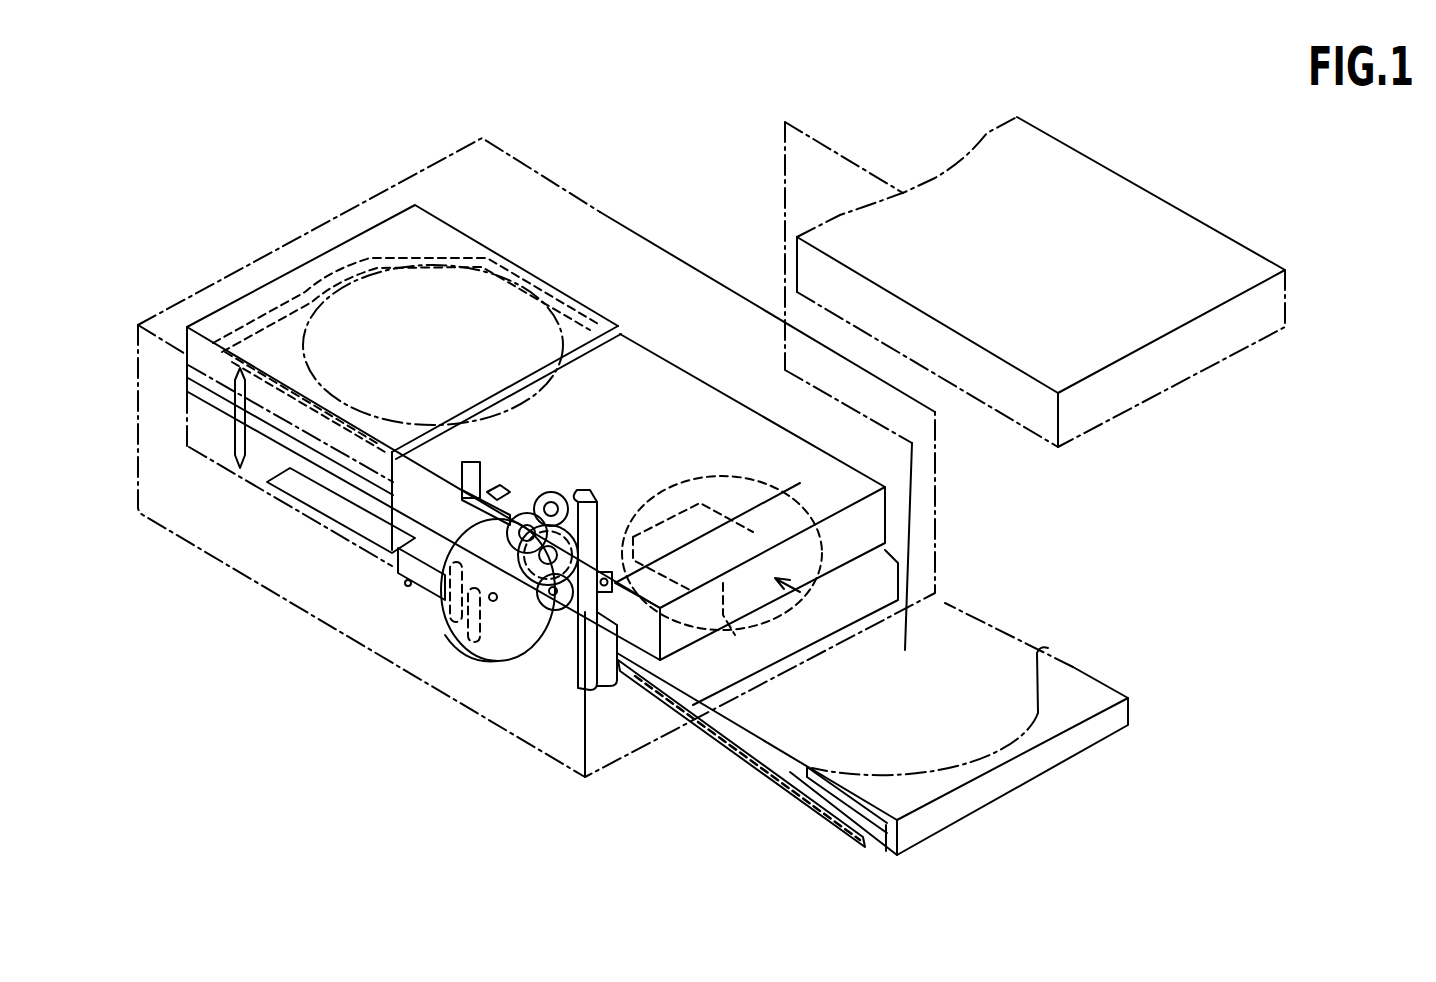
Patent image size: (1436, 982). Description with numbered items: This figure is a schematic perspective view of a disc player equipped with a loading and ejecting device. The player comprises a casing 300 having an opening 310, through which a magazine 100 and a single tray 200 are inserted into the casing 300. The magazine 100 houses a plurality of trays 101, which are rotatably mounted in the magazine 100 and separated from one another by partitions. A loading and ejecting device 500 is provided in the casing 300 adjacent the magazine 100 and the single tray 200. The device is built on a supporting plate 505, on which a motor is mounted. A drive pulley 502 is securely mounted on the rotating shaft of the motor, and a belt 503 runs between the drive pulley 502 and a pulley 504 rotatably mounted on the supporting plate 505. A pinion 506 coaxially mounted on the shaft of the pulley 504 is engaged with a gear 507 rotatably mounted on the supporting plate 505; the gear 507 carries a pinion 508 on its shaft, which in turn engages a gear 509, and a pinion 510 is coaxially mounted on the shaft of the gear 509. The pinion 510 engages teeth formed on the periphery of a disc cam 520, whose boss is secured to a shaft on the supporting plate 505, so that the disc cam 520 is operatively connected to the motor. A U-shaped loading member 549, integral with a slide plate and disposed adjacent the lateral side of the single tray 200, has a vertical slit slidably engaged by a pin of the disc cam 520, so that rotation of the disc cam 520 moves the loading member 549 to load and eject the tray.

The magazine 100 is at (1080, 158).
The tray 101 is at (580, 330).
The single tray 200 is at (1068, 672).
The casing 300 is at (593, 225).
The opening 310 is at (898, 517).
The loading and ejecting device 500 is at (502, 743).
The drive pulley 502 is at (580, 505).
The belt 503 is at (537, 497).
The pulley 504 is at (513, 497).
The supporting plate 505 is at (638, 703).
The pinion 506 is at (393, 520).
The gear 507 is at (607, 503).
The pinion 508 is at (410, 565).
The gear 509 is at (503, 665).
The pinion 510 is at (587, 550).
The disc cam 520 is at (480, 652).
The loading member 549 is at (445, 620).